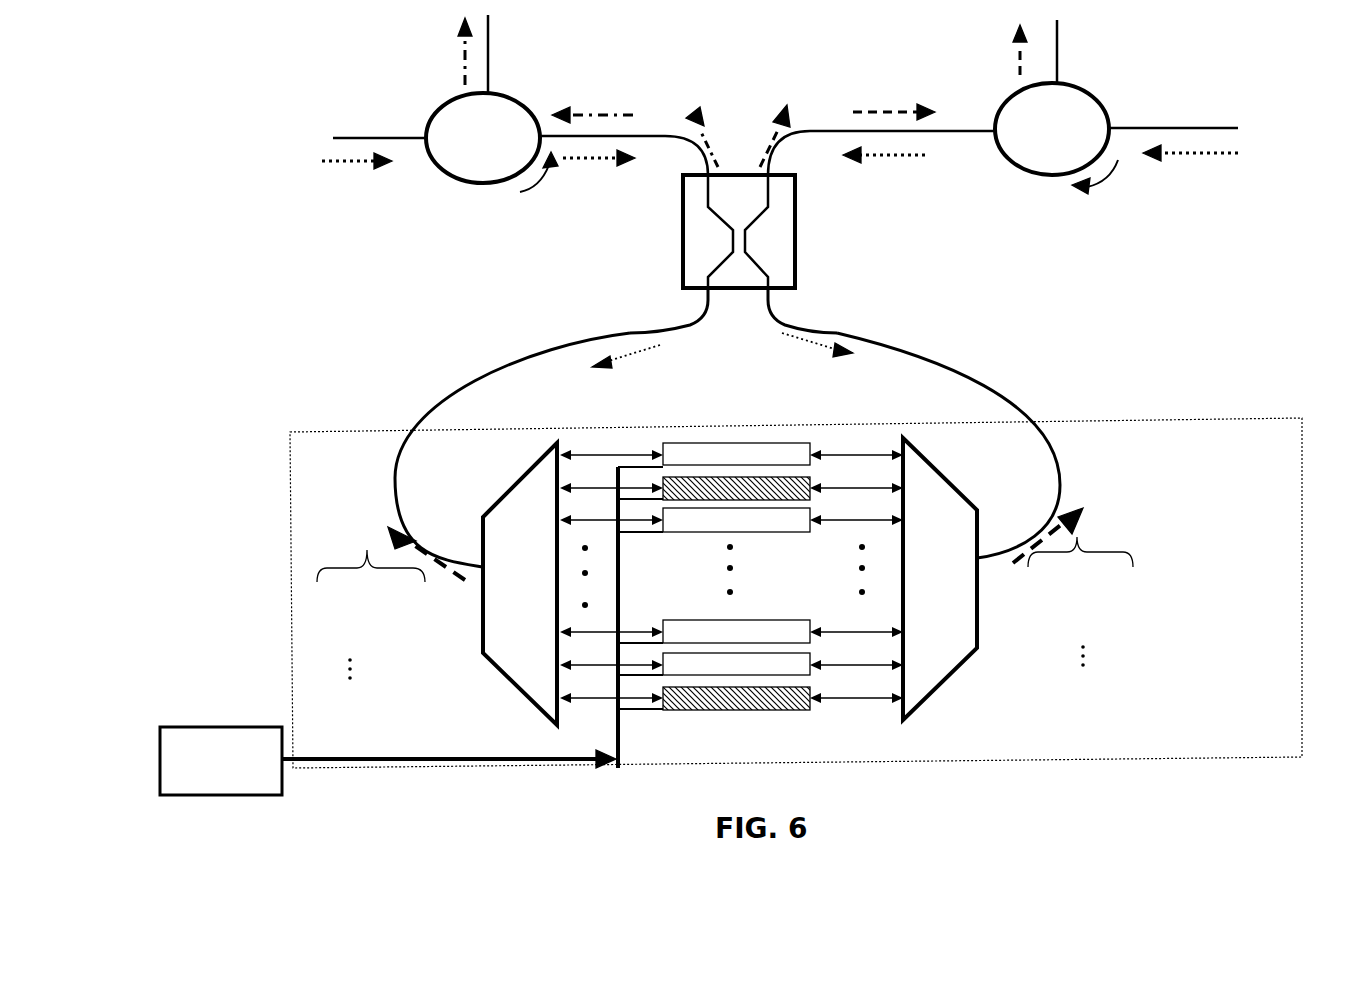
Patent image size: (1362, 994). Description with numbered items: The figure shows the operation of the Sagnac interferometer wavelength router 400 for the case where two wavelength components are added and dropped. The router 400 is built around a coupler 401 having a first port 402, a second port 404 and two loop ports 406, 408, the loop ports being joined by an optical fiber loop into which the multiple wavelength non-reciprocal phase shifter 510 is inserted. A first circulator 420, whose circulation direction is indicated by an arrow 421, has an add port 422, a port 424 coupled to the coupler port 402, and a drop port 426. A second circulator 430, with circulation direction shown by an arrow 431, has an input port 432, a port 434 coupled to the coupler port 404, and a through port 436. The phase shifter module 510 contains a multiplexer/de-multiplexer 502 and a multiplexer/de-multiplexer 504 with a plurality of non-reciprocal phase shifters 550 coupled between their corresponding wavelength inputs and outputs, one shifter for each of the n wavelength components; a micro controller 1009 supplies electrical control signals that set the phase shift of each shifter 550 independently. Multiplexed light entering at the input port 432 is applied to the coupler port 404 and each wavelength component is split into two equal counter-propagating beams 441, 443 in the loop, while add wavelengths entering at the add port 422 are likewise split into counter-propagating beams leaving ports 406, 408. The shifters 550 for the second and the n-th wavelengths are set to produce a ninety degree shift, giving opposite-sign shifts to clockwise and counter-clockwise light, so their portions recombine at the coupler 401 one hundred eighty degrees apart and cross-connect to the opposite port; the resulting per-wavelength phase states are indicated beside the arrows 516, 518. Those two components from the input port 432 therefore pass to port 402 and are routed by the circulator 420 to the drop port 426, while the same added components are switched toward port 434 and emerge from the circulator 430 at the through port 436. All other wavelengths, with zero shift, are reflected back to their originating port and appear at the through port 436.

The interferometer wavelength router 400 is at (1116, 302).
The coupler 401 is at (782, 267).
The port 402 is at (697, 168).
The port 404 is at (767, 170).
The port 406 is at (703, 292).
The port 408 is at (773, 290).
The circulator 420 is at (467, 162).
The arrow 421 is at (538, 193).
The add port 422 is at (428, 143).
The port 424 is at (540, 132).
The drop port 426 is at (472, 92).
The circulator 430 is at (1060, 152).
The arrow 431 is at (1110, 177).
The input port 432 is at (1112, 125).
The port 434 is at (987, 132).
The through port 436 is at (1060, 83).
The counter-propagating beam 441 is at (672, 345).
The counter-propagating beam 443 is at (782, 333).
The multiplexer/de-multiplexer 502 is at (958, 648).
The multiplexer/de-multiplexer 504 is at (498, 622).
The multiple wavelength non-reciprocal phase shifter 510 is at (1228, 417).
The arrow 516 is at (367, 552).
The arrow 518 is at (1077, 540).
The non-reciprocal phase shifters 550 is at (810, 712).
The micro controller 1009 is at (257, 737).